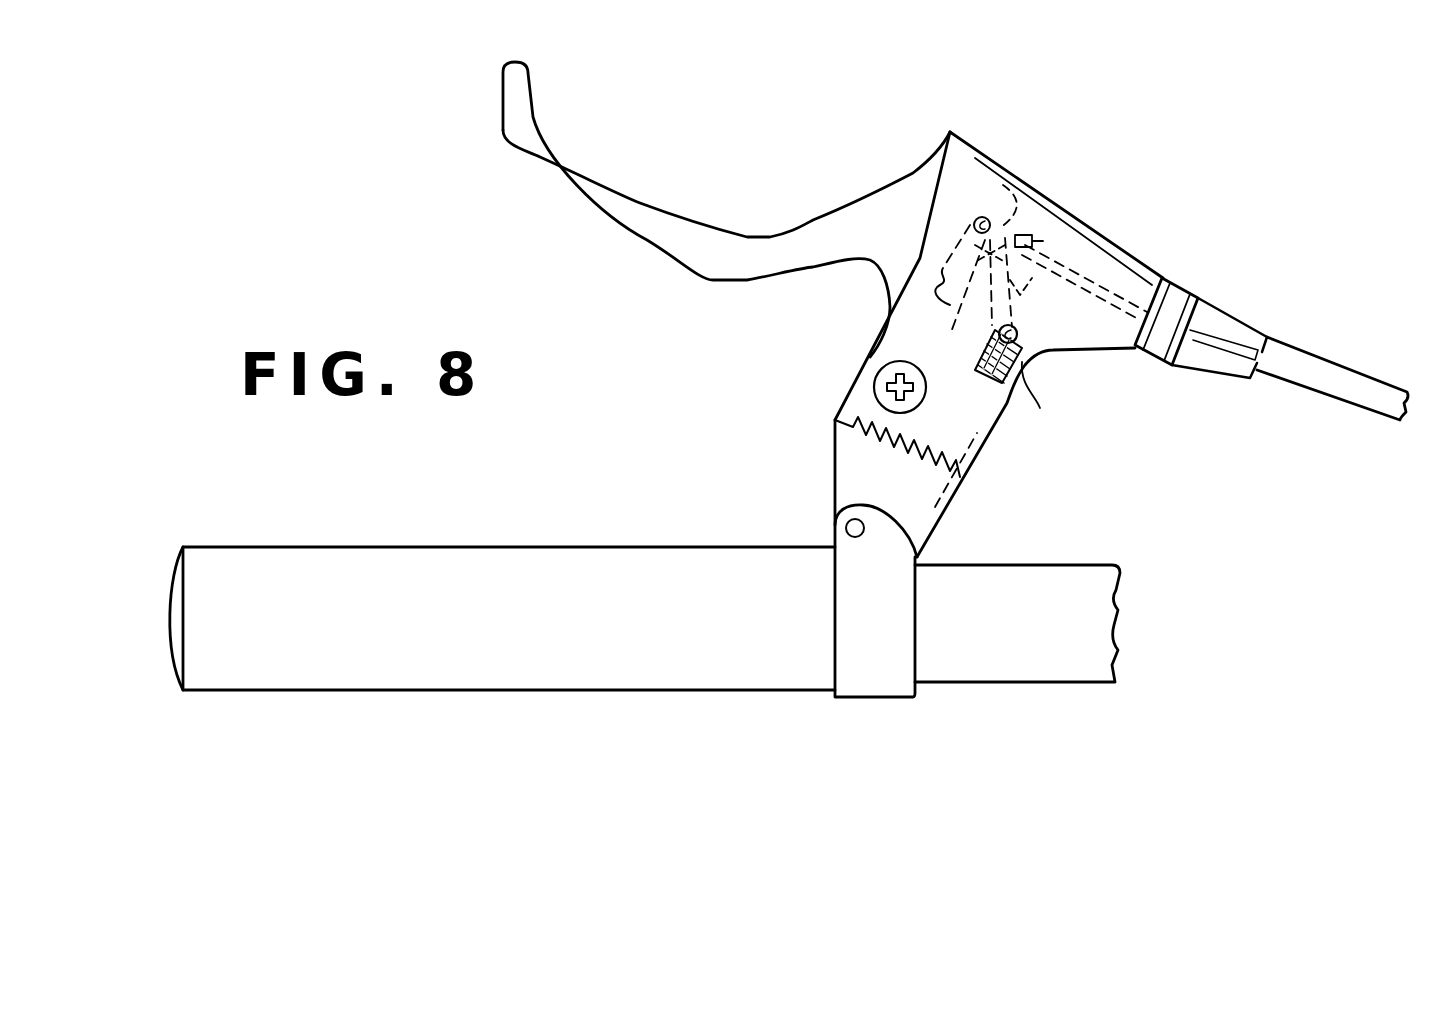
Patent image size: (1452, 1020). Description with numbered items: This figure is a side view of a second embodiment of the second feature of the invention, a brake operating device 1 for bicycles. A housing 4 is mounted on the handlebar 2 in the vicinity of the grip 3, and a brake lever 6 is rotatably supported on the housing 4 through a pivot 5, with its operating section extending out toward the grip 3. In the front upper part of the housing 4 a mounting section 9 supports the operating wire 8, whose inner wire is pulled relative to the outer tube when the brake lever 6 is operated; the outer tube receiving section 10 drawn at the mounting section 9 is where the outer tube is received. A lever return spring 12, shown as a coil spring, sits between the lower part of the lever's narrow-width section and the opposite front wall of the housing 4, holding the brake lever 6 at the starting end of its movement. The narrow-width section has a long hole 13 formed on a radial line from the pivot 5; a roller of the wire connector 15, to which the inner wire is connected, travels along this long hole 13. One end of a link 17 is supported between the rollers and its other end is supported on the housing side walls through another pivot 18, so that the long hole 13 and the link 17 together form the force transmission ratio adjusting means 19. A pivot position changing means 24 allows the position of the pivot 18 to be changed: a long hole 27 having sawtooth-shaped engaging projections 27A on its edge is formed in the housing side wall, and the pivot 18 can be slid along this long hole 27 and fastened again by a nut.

The brake operating device 1 is at (1127, 242).
The handlebar 2 is at (1070, 572).
The grip 3 is at (548, 557).
The housing 4 is at (967, 490).
The pivot 5 is at (873, 382).
The brake lever 6 is at (648, 228).
The operating wire 8 is at (1367, 410).
The mounting section 9 is at (1135, 282).
The cable adjuster ferrule 10 is at (1168, 302).
The lever return spring 12 is at (905, 442).
The long hole 13 is at (927, 298).
The wire connector 15 is at (1005, 185).
The link 17 is at (1053, 257).
The pivot 18 is at (1067, 352).
The force transmission ratio adjusting means 19 is at (983, 207).
The pivot position changing means 24 is at (975, 345).
The long hole 27 is at (1005, 405).
The engaging projections 27A is at (1059, 400).